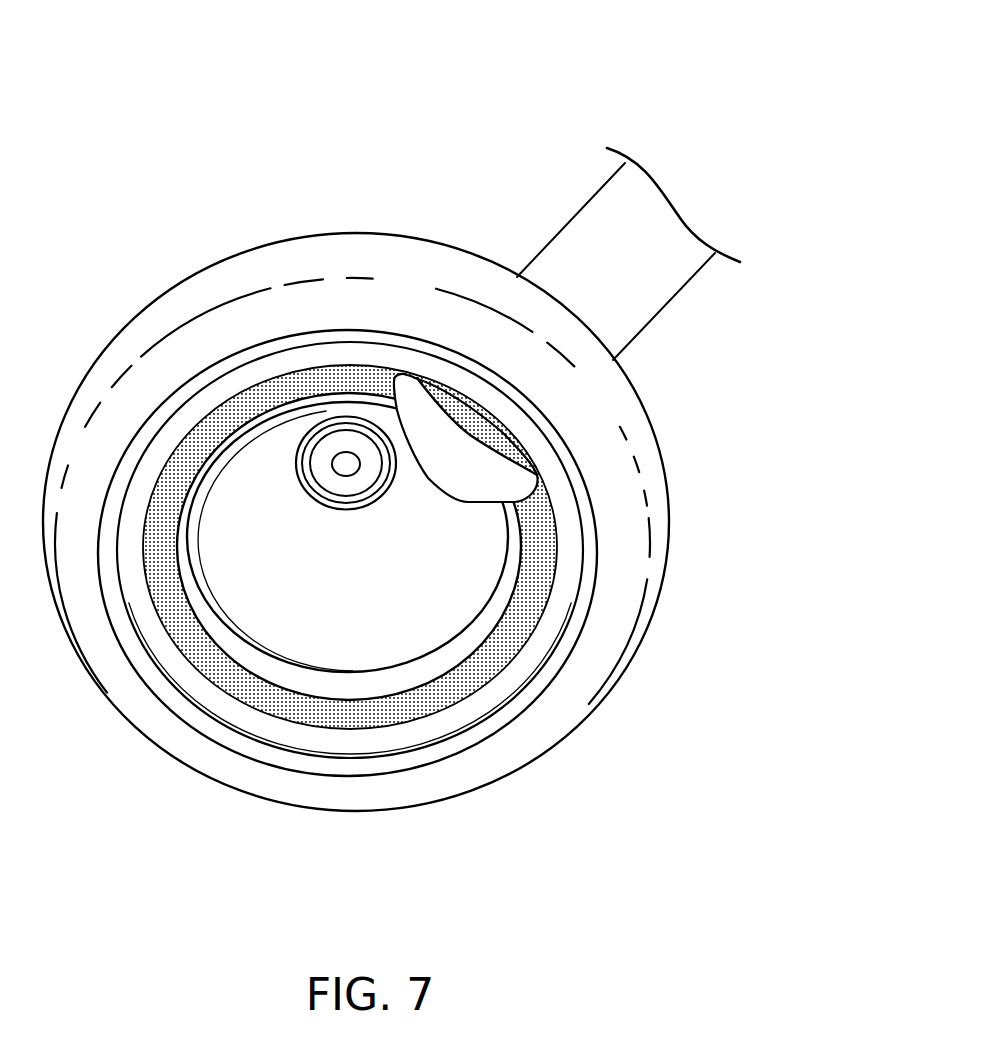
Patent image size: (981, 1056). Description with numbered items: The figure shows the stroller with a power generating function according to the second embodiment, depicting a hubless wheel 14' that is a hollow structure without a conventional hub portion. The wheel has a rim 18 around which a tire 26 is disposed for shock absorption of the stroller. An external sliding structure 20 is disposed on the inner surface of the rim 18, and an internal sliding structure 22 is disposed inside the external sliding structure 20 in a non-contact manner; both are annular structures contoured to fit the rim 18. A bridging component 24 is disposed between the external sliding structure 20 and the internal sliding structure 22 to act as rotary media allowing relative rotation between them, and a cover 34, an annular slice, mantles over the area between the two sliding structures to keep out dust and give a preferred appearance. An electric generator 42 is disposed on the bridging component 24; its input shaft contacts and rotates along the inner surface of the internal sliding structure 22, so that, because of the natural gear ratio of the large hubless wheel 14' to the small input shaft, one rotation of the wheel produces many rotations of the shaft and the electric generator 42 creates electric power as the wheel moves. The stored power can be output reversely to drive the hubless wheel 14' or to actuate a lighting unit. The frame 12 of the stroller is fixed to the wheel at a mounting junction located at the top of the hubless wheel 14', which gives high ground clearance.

The hubless wheel 14' is at (399, 446).
The frame 12 is at (657, 277).
The tire 26 is at (623, 562).
The rim 18 is at (583, 607).
The external sliding structure 20 is at (537, 660).
The cover 34 is at (465, 698).
The internal sliding structure 22 is at (288, 670).
The electric generator 42 is at (342, 442).
The bridging component 24 is at (413, 397).